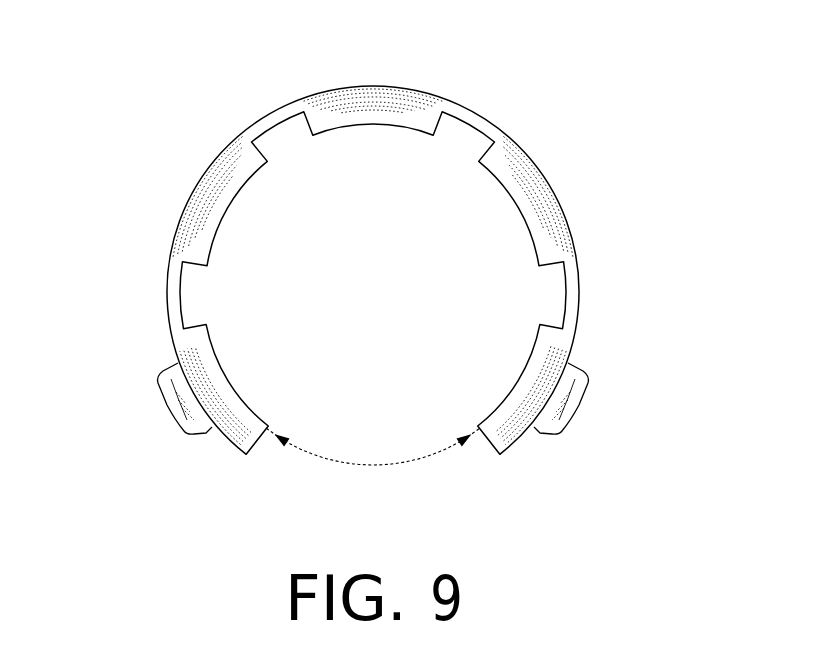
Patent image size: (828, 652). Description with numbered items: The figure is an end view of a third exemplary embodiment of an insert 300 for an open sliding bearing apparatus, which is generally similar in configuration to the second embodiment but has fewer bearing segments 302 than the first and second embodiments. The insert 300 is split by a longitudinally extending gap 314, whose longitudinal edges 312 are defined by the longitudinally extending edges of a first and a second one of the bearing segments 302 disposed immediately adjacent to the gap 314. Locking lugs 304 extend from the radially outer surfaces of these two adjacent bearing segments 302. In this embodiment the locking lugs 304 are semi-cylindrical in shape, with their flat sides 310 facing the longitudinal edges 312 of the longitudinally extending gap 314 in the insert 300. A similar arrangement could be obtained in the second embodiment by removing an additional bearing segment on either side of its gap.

The insert 300 is at (566, 211).
The bearing segments 302 is at (522, 147).
The locking lugs 304 is at (171, 405).
The flat sides 310 is at (206, 433).
The longitudinal edges 312 is at (460, 442).
The longitudinally extending gap 314 is at (380, 464).